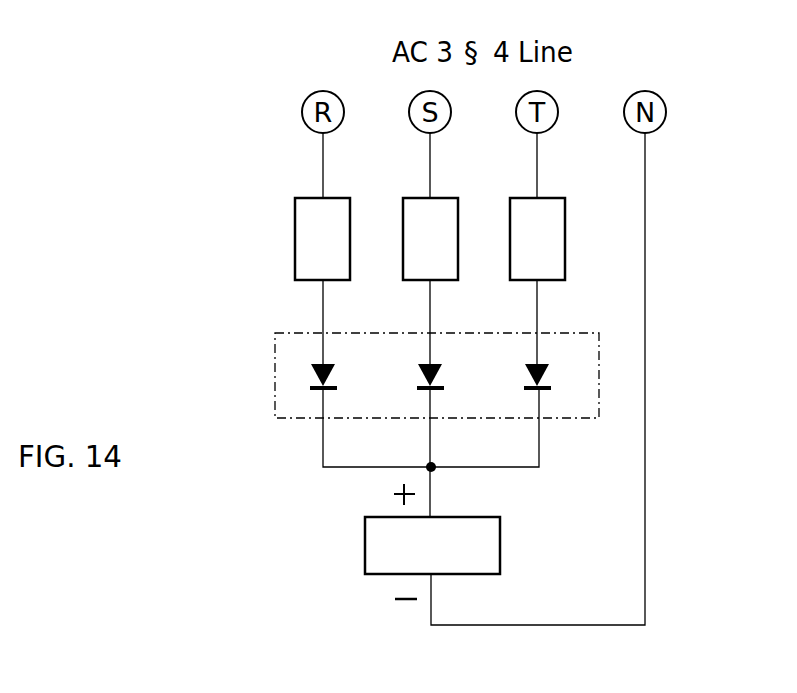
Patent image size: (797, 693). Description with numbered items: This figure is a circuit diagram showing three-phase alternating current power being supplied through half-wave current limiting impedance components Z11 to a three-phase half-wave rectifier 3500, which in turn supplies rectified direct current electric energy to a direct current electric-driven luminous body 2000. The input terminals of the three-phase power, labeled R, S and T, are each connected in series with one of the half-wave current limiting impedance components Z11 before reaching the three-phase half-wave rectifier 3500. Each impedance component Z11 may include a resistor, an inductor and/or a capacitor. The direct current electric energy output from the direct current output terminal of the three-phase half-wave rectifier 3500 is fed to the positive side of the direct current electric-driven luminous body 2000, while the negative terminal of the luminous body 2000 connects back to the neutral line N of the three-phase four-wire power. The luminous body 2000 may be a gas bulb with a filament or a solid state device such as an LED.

The half-wave current limiting impedance component Z11 is at (295, 252).
The three phase half-wave rectifier 3500 is at (275, 387).
The direct current electric-driven luminous body 2000 is at (365, 546).